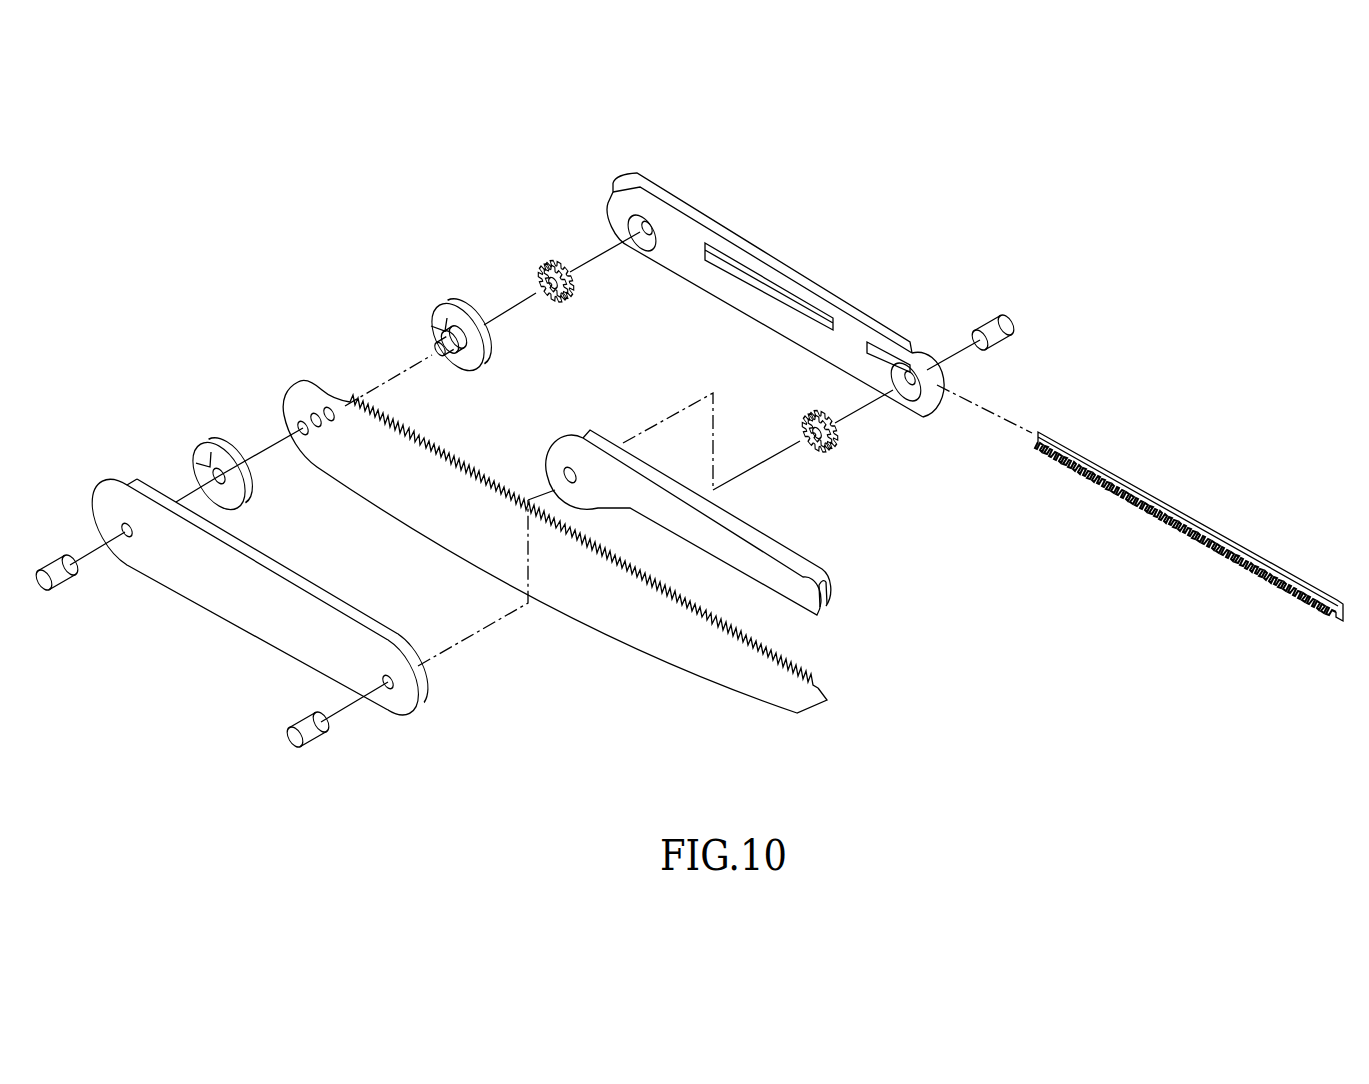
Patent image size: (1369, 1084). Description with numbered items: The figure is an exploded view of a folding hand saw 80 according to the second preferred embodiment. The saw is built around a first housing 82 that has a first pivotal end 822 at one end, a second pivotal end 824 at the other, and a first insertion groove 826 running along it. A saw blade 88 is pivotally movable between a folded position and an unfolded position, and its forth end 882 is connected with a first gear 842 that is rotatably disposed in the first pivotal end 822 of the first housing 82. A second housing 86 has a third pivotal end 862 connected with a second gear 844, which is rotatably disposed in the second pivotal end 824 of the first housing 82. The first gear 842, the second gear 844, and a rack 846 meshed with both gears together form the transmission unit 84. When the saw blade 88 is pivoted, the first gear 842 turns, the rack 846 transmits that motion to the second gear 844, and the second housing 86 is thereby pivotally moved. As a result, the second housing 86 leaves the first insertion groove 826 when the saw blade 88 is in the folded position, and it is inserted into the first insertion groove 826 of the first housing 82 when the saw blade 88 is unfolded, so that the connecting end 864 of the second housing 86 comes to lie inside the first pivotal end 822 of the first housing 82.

The folding hand saw 80 is at (1097, 268).
The first housing 82 is at (760, 238).
The first pivotal end 822 is at (617, 216).
The second pivotal end 824 is at (917, 407).
The first insertion groove 826 is at (428, 688).
The transmission unit 84 is at (982, 578).
The first gear 842 is at (553, 266).
The second gear 844 is at (823, 452).
The rack 846 is at (1123, 480).
The second housing 86 is at (823, 558).
The third pivotal end 862 is at (582, 450).
The connecting end 864 is at (793, 592).
The saw blade 88 is at (637, 617).
The forth end 882 is at (297, 388).